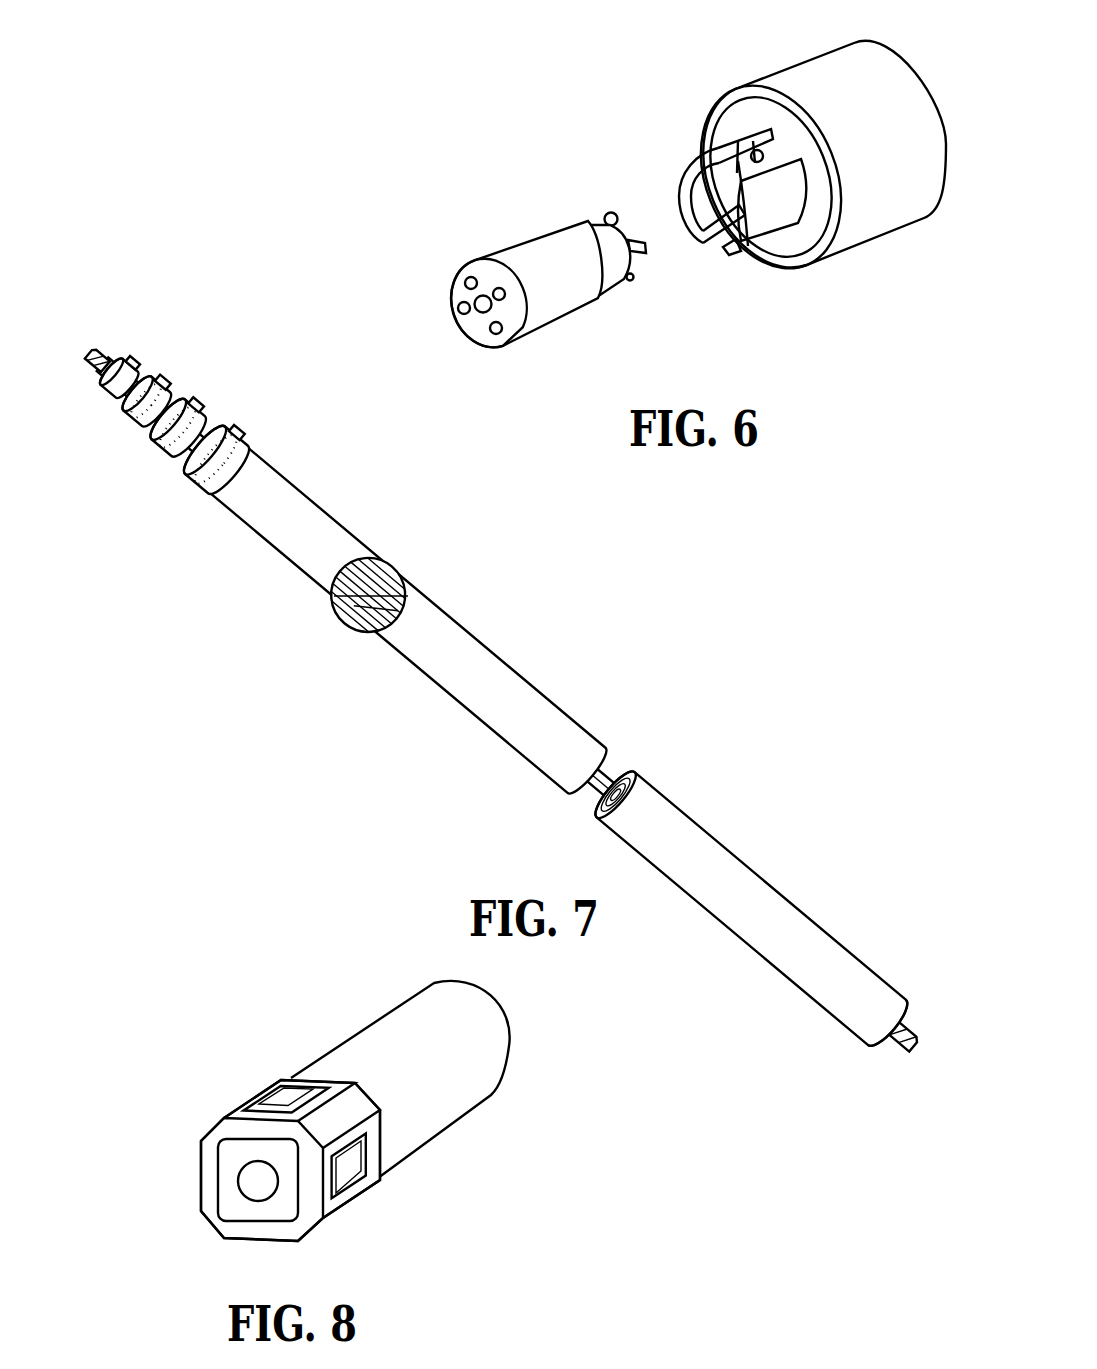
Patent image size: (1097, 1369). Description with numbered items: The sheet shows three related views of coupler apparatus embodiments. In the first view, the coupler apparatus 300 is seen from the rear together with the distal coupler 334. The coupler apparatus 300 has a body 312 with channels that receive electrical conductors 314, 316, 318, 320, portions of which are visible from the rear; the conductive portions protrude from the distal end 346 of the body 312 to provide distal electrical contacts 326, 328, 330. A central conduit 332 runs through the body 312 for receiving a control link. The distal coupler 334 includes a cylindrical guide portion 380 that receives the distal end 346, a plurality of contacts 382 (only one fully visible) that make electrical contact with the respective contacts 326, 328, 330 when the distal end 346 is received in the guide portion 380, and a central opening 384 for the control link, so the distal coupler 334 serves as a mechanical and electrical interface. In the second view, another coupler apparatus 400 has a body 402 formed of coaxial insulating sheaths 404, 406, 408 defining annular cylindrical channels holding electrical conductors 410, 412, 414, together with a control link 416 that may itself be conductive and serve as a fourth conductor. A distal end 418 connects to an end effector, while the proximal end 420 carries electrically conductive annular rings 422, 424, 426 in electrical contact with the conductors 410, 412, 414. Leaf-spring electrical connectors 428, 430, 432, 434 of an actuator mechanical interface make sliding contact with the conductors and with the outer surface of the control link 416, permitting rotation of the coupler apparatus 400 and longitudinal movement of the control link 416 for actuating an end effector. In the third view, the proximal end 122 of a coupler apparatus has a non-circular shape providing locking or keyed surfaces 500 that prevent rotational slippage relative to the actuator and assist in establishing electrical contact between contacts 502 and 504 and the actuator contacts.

In FIG. 6, the coupler apparatus 300 is at (579, 336).
In FIG. 6, the body 312 is at (523, 245).
In FIG. 6, the electrical conductor 314 is at (463, 283).
In FIG. 6, the electrical conductor 316 is at (505, 300).
In FIG. 6, the electrical conductor 318 is at (457, 307).
In FIG. 6, the electrical conductor 320 is at (494, 334).
In FIG. 6, the distal electrical contact 326 is at (607, 212).
In FIG. 6, the distal electrical contact 328 is at (646, 246).
In FIG. 6, the distal electrical contact 330 is at (633, 278).
In FIG. 6, the central conduit 332 is at (478, 310).
In FIG. 6, the distal coupler 334 is at (810, 75).
In FIG. 6, the distal end 346 is at (614, 230).
In FIG. 6, the cylindrical guide portion 380 is at (690, 160).
In FIG. 6, the contacts 382 is at (752, 158).
In FIG. 6, the central opening 384 is at (740, 247).
In FIG. 7, the coupler apparatus 400 is at (605, 585).
In FIG. 7, the body 402 is at (688, 835).
In FIG. 7, the coaxial insulating sheath 404 is at (392, 577).
In FIG. 7, the coaxial insulating sheath 406 is at (408, 593).
In FIG. 7, the coaxial insulating sheath 408 is at (407, 602).
In FIG. 7, the electrical conductor 410 is at (333, 595).
In FIG. 7, the electrical conductor 412 is at (357, 608).
In FIG. 7, the electrical conductor 414 is at (365, 620).
In FIG. 7, the control link 416 is at (100, 358).
In FIG. 7, the distal end 418 is at (903, 1010).
In FIG. 7, the proximal end 420 is at (81, 409).
In FIG. 7, the electrically conductive annular ring 422 is at (200, 473).
In FIG. 7, the electrically conductive annular ring 424 is at (168, 442).
In FIG. 7, the electrically conductive annular ring 426 is at (137, 410).
In FIG. 7, the electrical connector 428 is at (240, 440).
In FIG. 7, the electrical connector 430 is at (197, 410).
In FIG. 7, the electrical connector 432 is at (170, 375).
In FIG. 7, the electrical connector 434 is at (130, 368).
In FIG. 8, the proximal end 122 is at (298, 1134).
In FIG. 8, the locking or keyed surfaces 500 is at (305, 1083).
In FIG. 8, the contact 502 is at (332, 1168).
In FIG. 8, the contact 504 is at (282, 1103).